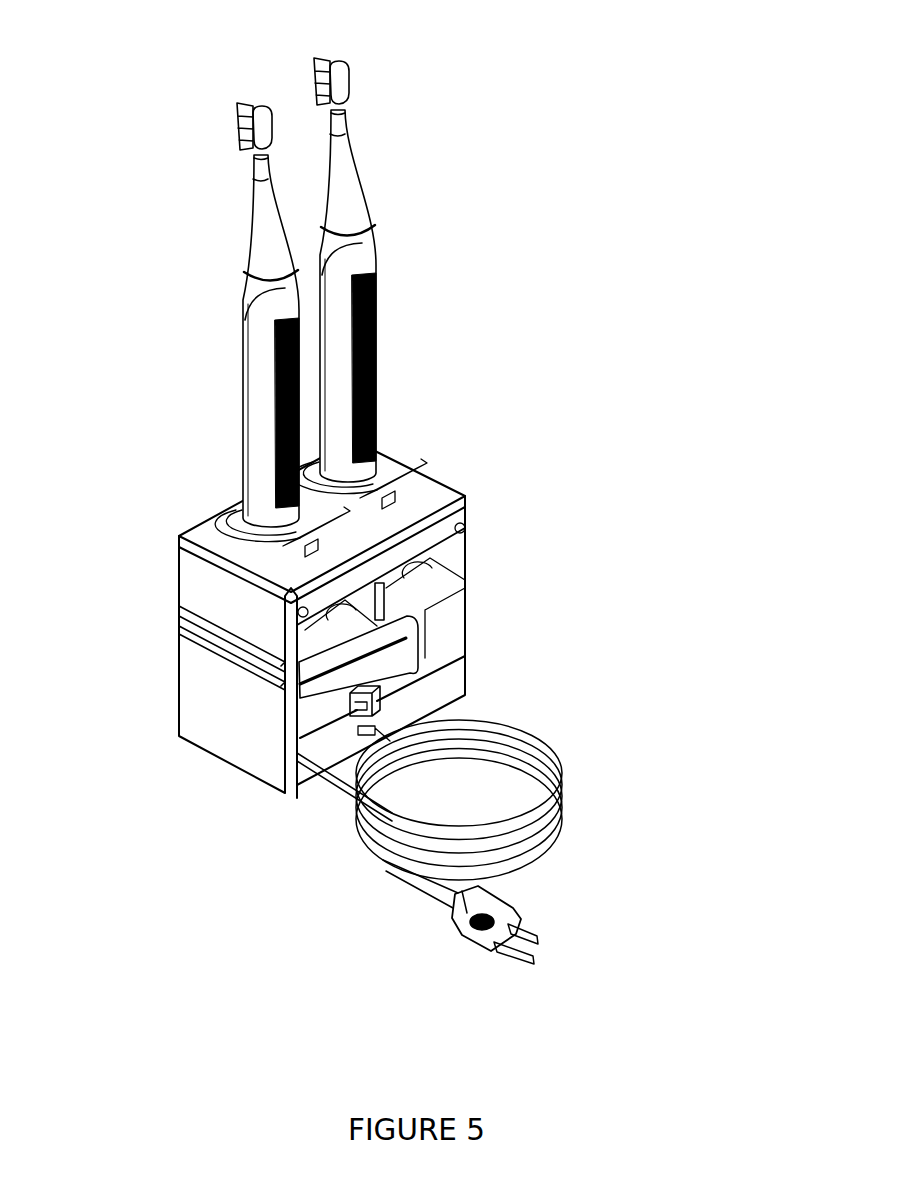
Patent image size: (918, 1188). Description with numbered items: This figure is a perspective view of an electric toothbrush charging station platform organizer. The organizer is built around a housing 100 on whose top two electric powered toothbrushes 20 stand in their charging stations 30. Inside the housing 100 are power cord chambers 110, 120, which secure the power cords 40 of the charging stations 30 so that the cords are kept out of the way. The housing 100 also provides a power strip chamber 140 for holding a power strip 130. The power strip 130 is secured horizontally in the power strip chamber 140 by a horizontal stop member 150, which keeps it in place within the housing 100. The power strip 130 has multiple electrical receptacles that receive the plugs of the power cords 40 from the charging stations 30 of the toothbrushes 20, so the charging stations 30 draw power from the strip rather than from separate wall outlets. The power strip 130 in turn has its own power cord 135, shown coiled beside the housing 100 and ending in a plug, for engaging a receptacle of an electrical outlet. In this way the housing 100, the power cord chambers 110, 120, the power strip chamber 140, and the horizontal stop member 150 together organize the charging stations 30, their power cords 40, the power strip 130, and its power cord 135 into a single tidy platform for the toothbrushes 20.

The electric powered toothbrush 20 is at (300, 427).
The charging station 30 is at (345, 515).
The power cord 40 is at (298, 632).
The housing 100 is at (213, 602).
The power cord chamber 110 is at (330, 637).
The power cord chamber 120 is at (385, 600).
The power strip 130 is at (357, 664).
The power cord 135 is at (530, 828).
The power strip chamber 140 is at (452, 630).
The horizontal stop member 150 is at (378, 700).